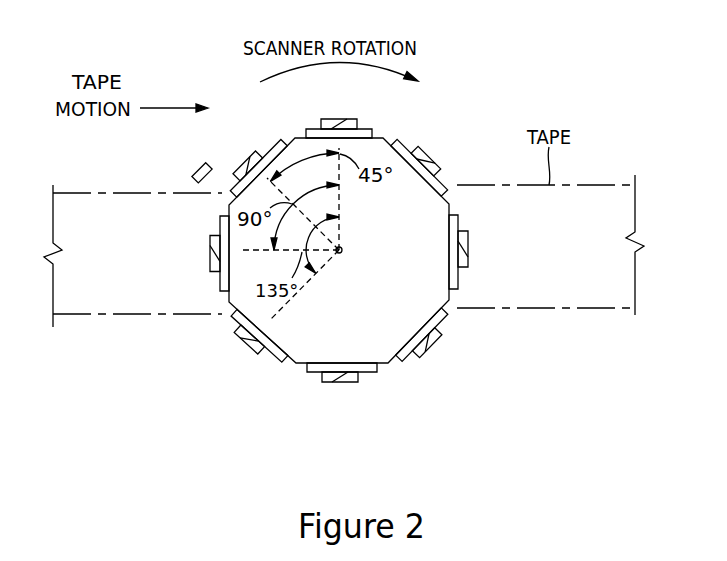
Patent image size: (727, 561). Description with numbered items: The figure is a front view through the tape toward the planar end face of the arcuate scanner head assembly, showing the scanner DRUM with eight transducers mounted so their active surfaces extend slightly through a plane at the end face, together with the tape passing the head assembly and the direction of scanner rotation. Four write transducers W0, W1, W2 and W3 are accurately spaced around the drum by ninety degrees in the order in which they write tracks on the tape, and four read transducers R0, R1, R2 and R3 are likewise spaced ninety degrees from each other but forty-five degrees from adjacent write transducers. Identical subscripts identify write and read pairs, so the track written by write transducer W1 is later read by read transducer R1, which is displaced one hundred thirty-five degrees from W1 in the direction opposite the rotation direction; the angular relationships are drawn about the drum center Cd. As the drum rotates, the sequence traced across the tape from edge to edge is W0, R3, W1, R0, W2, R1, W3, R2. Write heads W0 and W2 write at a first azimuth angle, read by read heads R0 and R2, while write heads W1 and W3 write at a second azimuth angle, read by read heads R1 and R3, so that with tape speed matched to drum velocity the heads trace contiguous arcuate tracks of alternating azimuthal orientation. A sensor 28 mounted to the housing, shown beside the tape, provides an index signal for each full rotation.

The sensor 28 is at (195, 178).
The write transducer W0 is at (333, 119).
The write transducer W1 is at (210, 263).
The write transducer W2 is at (345, 382).
The write transducer W3 is at (469, 258).
The read transducer R0 is at (240, 331).
The read transducer R1 is at (428, 353).
The read transducer R2 is at (430, 150).
The read transducer R3 is at (250, 152).
The drum center Cd is at (342, 253).
The scanner drum DRUM is at (294, 366).